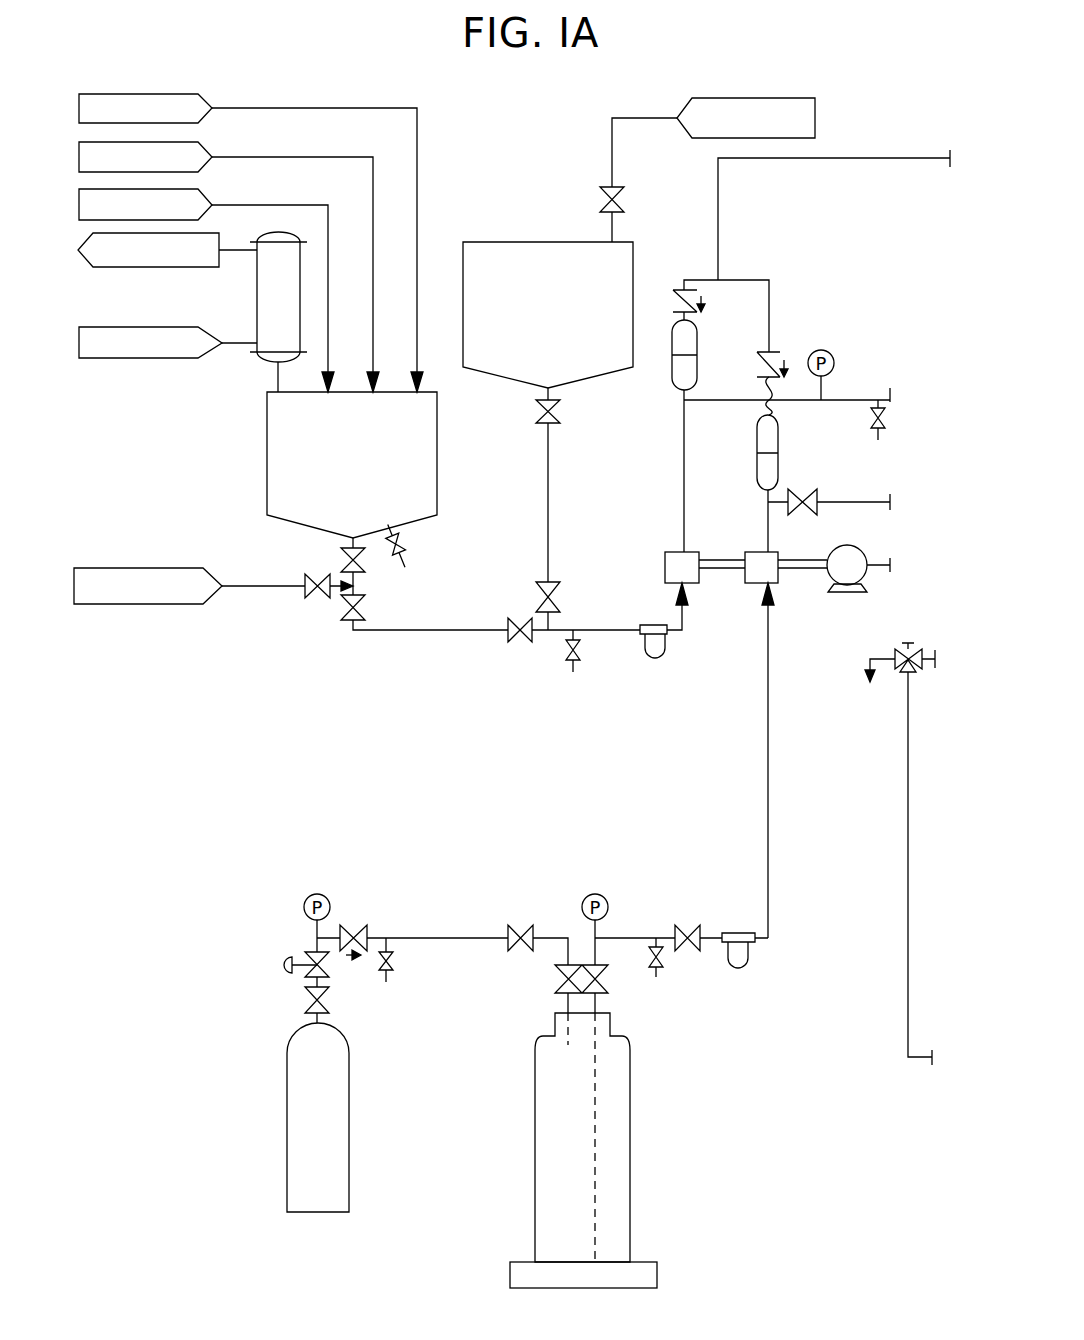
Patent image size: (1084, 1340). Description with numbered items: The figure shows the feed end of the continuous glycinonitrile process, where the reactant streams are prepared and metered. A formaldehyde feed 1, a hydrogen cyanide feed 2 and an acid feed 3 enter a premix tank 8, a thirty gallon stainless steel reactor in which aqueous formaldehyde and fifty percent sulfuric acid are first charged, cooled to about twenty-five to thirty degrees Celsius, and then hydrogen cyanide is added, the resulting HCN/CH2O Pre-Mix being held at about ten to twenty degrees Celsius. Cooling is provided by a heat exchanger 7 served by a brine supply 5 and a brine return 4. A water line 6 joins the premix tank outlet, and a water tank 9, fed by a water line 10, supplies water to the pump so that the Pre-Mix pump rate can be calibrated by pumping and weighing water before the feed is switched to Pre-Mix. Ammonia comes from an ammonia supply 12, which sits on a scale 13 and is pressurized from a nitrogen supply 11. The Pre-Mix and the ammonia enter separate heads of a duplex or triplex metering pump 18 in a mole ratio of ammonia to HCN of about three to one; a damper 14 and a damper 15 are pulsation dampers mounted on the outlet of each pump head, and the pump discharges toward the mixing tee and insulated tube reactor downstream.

The formaldehyde feed 1 is at (145, 109).
The hydrogen cyanide feed 2 is at (145, 157).
The acid feed 3 is at (145, 204).
The brine return 4 is at (148, 250).
The brine supply 5 is at (150, 342).
The water line 6 is at (148, 586).
The heat exchanger 7 is at (278, 297).
The premix tank 8 is at (352, 465).
The water tank 9 is at (548, 315).
The water line 10 is at (746, 118).
The nitrogen supply 11 is at (318, 1117).
The ammonia supply 12 is at (582, 1137).
The scale 13 is at (583, 1275).
The damper 14 is at (710, 343).
The damper 15 is at (792, 437).
The metering pump 18 is at (847, 584).